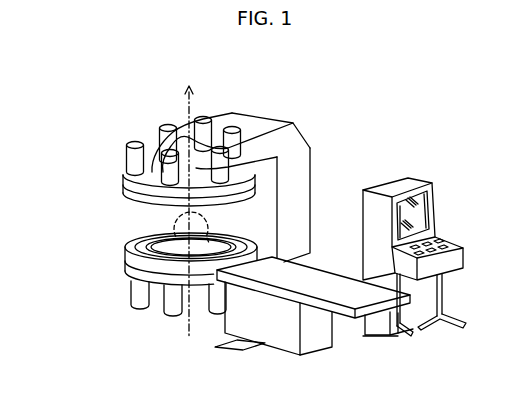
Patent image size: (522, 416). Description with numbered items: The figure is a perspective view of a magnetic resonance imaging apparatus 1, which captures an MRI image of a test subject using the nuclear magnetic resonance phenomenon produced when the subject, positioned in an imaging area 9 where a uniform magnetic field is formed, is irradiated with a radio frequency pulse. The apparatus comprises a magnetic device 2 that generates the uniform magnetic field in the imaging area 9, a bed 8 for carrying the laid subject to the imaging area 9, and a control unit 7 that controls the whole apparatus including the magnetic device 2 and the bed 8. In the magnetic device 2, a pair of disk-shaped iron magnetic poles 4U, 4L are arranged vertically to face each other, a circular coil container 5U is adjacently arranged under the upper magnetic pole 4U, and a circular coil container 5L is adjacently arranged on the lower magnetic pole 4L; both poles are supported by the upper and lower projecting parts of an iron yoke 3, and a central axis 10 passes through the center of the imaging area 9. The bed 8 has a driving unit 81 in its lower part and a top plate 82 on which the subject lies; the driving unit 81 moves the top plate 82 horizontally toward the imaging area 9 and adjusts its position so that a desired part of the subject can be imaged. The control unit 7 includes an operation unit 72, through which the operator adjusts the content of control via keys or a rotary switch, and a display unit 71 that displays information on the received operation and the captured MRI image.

The magnetic resonance imaging apparatus 1 is at (70, 118).
The magnetic device 2 is at (283, 113).
The iron yoke 3 is at (305, 168).
The upper magnetic pole 4U is at (127, 162).
The circular coil container 5U is at (126, 189).
The imaging area 9 is at (172, 232).
The central axis 10 is at (186, 100).
The lower magnetic pole 4L is at (136, 280).
The circular coil container 5L is at (126, 255).
The control unit 7 is at (430, 178).
The display unit 71 is at (420, 219).
The operation unit 72 is at (440, 243).
The bed 8 is at (275, 353).
The driving unit 81 is at (290, 338).
The top plate 82 is at (337, 294).